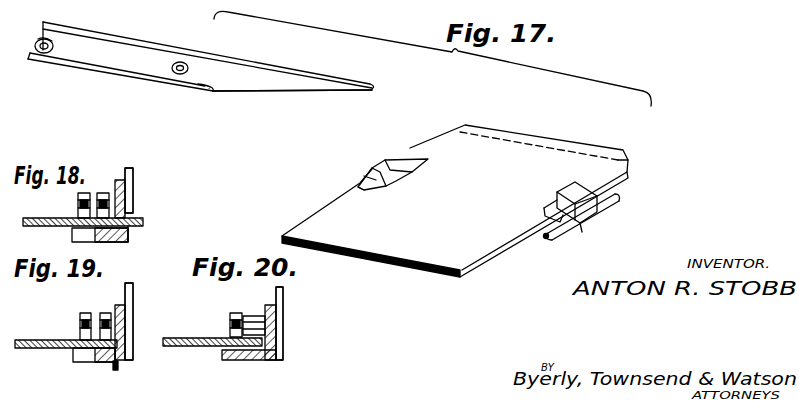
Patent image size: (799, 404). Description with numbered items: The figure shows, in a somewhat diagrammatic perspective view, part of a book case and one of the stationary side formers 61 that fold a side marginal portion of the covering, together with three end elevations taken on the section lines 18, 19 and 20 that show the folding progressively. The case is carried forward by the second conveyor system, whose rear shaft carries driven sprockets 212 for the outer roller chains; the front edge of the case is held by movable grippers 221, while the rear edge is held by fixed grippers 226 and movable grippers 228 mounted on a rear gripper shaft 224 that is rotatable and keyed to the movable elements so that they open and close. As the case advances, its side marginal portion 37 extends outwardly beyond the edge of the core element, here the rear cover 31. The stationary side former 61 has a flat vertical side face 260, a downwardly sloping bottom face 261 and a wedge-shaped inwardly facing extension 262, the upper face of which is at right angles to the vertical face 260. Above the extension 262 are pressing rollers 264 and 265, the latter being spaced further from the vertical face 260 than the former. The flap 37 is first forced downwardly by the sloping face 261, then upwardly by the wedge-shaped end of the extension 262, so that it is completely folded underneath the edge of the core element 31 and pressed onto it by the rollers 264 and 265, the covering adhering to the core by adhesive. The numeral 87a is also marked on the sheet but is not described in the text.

In FIG. 17, the section line 18— 18 is at (388, 81).
In FIG. 17, the section line 19— 19 is at (222, 17).
In FIG. 17, the section line 20— 20 is at (110, 52).
In FIG. 18, the rear cover 31 is at (53, 228).
In FIG. 19, the rear cover 31 is at (53, 350).
In FIG. 20, the rear cover 31 is at (195, 348).
In FIG. 17, the side marginal portion 37 is at (551, 138).
In FIG. 18, the side marginal portion 37 is at (143, 218).
In FIG. 19, the side marginal portion 37 is at (118, 366).
In FIG. 20, the side marginal portion 37 is at (257, 362).
In FIG. 17, the stationary side former 61 is at (280, 36).
In FIG. 17, the member 87a is at (597, 5).
In FIG. 17, the driven sprockets 212 is at (736, 4).
In FIG. 17, the movable grippers 221 is at (422, 168).
In FIG. 17, the rear gripper shaft 224 is at (545, 238).
In FIG. 17, the fixed grippers 226 is at (570, 231).
In FIG. 17, the movable grippers 228 is at (556, 199).
In FIG. 17, the flat vertical side face 260 is at (300, 78).
In FIG. 18, the flat vertical side face 260 is at (133, 190).
In FIG. 19, the flat vertical side face 260 is at (130, 292).
In FIG. 20, the flat vertical side face 260 is at (281, 300).
In FIG. 17, the downwardly sloping bottom face 261 is at (292, 97).
In FIG. 18, the downwardly sloping bottom face 261 is at (128, 237).
In FIG. 17, the wedge-shaped inwardly facing extension 262 is at (88, 69).
In FIG. 18, the wedge-shaped inwardly facing extension 262 is at (105, 242).
In FIG. 19, the wedge-shaped inwardly facing extension 262 is at (92, 362).
In FIG. 20, the wedge-shaped inwardly facing extension 262 is at (235, 362).
In FIG. 17, the pressing roller 264 is at (179, 62).
In FIG. 18, the pressing roller 264 is at (103, 192).
In FIG. 19, the pressing roller 264 is at (103, 313).
In FIG. 20, the pressing roller 264 is at (254, 325).
In FIG. 17, the pressing roller 265 is at (42, 53).
In FIG. 18, the pressing roller 265 is at (87, 192).
In FIG. 19, the pressing roller 265 is at (82, 325).
In FIG. 20, the pressing roller 265 is at (235, 301).